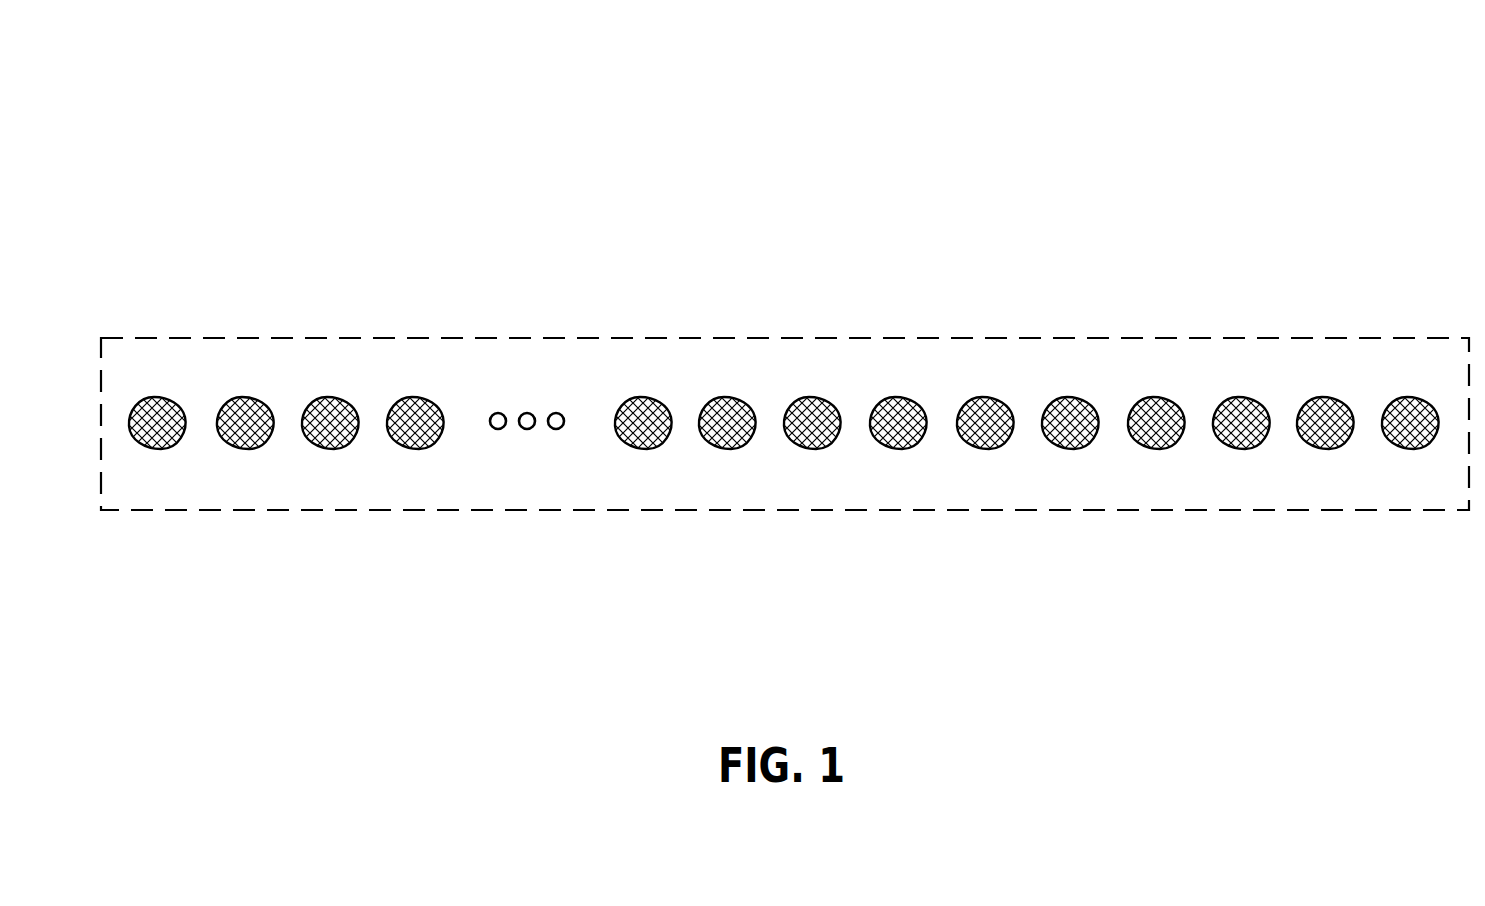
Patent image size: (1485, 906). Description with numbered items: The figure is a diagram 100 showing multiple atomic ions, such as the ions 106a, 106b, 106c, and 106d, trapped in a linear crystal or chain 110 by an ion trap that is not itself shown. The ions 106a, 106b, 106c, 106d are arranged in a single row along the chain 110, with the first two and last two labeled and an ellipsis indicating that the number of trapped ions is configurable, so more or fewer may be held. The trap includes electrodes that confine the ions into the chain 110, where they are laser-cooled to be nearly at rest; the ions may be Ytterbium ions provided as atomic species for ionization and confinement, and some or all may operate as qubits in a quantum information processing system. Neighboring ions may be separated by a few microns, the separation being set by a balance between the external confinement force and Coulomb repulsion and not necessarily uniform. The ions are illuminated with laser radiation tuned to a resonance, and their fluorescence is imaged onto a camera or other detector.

The diagram 100 is at (267, 90).
The linear crystal or chain 110 is at (850, 333).
The ion 106a is at (190, 400).
The ion 106b is at (272, 400).
The ion 106c is at (1350, 400).
The ion 106d is at (1434, 400).